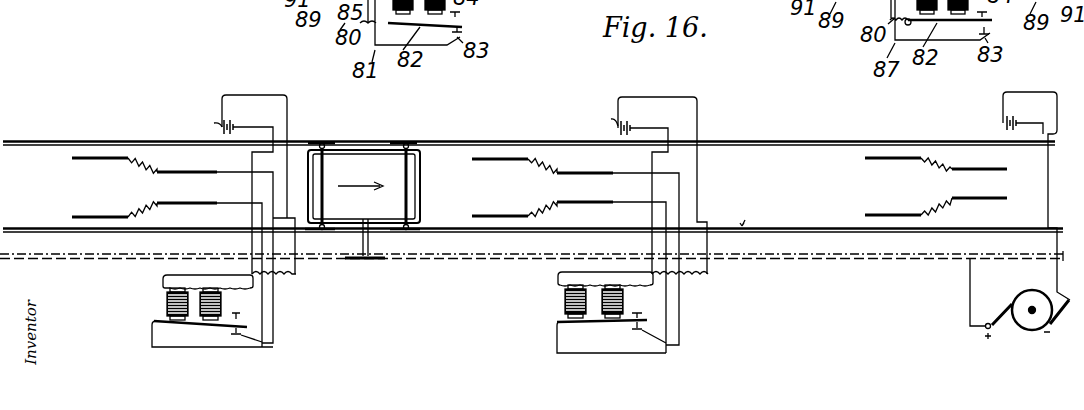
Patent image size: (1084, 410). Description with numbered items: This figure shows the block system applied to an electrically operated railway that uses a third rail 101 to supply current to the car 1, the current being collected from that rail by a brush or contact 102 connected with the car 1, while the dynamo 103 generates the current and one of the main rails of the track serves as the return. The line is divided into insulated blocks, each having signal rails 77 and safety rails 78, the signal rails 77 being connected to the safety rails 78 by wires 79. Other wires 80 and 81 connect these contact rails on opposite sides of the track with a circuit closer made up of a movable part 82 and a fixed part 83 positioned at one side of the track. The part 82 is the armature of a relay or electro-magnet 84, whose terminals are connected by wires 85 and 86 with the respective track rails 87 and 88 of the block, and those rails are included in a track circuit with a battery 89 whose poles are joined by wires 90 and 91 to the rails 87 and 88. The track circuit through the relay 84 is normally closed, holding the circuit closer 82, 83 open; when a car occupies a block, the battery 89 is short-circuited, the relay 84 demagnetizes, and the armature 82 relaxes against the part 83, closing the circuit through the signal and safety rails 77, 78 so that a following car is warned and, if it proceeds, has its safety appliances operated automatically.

The car 1 is at (377, 150).
The signal rails 77 is at (100, 162).
The safety rails 78 is at (197, 173).
The wires 79 is at (150, 174).
The wire 80 is at (152, 338).
The wire 81 is at (137, 141).
The circuit closer armature 82 is at (198, 330).
The circuit closer contact 83 is at (235, 341).
The relay or electro-magnet 84 is at (166, 306).
The wire 85 is at (260, 285).
The wire 86 is at (210, 274).
The track rail 87 is at (270, 334).
The track rail 88 is at (125, 237).
The battery 89 is at (241, 124).
The wire 90 is at (1048, 174).
The wire 91 is at (1007, 125).
The third rail 101 is at (490, 259).
The brush or contact 102 is at (372, 261).
The dynamo 103 is at (1020, 292).